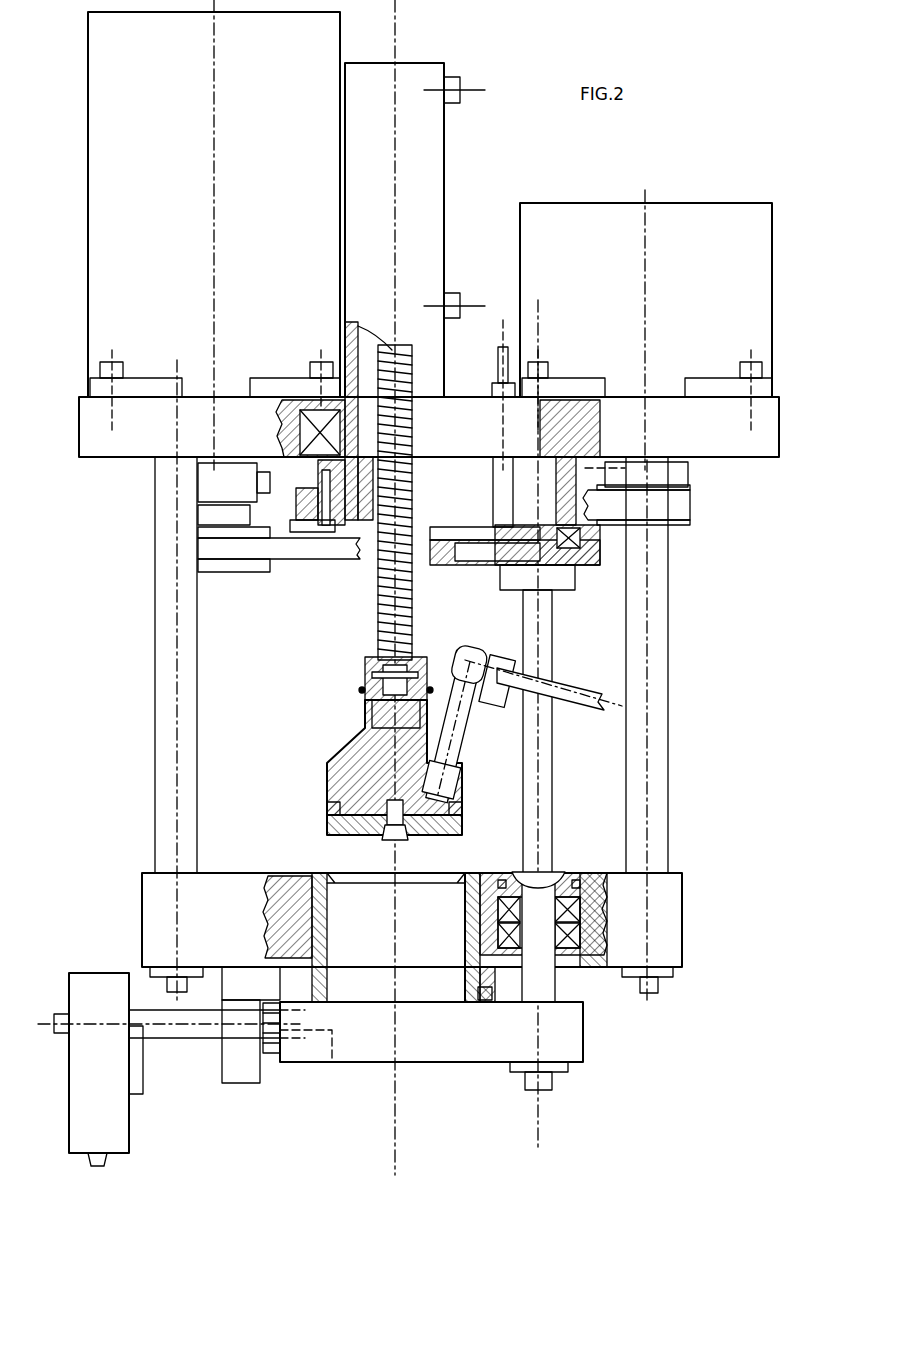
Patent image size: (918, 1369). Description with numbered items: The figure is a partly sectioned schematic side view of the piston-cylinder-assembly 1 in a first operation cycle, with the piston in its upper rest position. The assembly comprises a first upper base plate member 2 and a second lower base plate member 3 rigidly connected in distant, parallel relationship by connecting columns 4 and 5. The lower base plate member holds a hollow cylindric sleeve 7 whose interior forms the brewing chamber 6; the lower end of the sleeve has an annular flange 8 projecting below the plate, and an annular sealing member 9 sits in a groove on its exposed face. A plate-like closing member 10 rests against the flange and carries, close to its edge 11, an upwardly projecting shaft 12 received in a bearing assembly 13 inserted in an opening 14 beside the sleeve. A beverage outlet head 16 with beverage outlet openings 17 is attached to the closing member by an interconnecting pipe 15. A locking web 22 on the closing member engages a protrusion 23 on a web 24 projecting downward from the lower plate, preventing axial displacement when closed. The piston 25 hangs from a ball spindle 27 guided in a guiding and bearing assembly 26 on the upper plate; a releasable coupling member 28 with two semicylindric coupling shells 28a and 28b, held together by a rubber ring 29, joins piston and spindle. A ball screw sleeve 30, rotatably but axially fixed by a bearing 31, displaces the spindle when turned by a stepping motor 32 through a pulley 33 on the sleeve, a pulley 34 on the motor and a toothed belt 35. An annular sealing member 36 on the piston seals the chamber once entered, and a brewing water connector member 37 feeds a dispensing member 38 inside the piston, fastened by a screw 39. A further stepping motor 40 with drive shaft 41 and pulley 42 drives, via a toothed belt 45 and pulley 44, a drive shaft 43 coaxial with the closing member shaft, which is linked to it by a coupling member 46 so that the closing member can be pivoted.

The piston-cylinder-assembly 1 is at (122, 626).
The first upper base plate member 2 is at (96, 430).
The second lower base plate member 3 is at (152, 905).
The connecting column 4 is at (158, 700).
The connecting column 5 is at (652, 738).
The brewing chamber 6 is at (345, 880).
The hollow cylindric sleeve 7 is at (470, 900).
The annular flange 8 is at (493, 990).
The annular sealing member 9 is at (475, 1000).
The closing member 10 is at (375, 1050).
The edge 11 is at (585, 1035).
The shaft 12 is at (545, 980).
The bearing assembly 13 is at (575, 908).
The opening 14 is at (600, 893).
The interconnecting pipe 15 is at (186, 1024).
The beverage outlet head 16 is at (88, 1060).
The beverage outlet opening 17 is at (90, 1168).
The locking web 22 is at (283, 1016).
The protrusion 23 is at (274, 1056).
The web 24 is at (242, 1070).
The piston 25 is at (342, 776).
The guiding and bearing assembly 26 is at (435, 168).
The ball spindle 27 is at (377, 636).
The releasable coupling member 28 is at (345, 671).
The coupling shell 28a is at (364, 706).
The coupling shell 28b is at (436, 680).
The rubber ring 29 is at (358, 690).
The ball screw sleeve 30 is at (352, 345).
The bearing 31 is at (302, 436).
The stepping motor 32 is at (740, 226).
The pulley 33 is at (320, 545).
The pulley 34 is at (675, 470).
The toothed belt 35 is at (302, 544).
The annular sealing member 36 is at (330, 810).
The brewing water connector member 37 is at (468, 650).
The dispensing member 38 is at (376, 840).
The screw 39 is at (400, 840).
The stepping motor 40 is at (112, 130).
The drive shaft 41 is at (205, 462).
The pulley 42 is at (241, 578).
The drive shaft 43 is at (553, 624).
The pulley 44 is at (466, 570).
The toothed belt 45 is at (312, 540).
The coupling member 46 is at (560, 875).